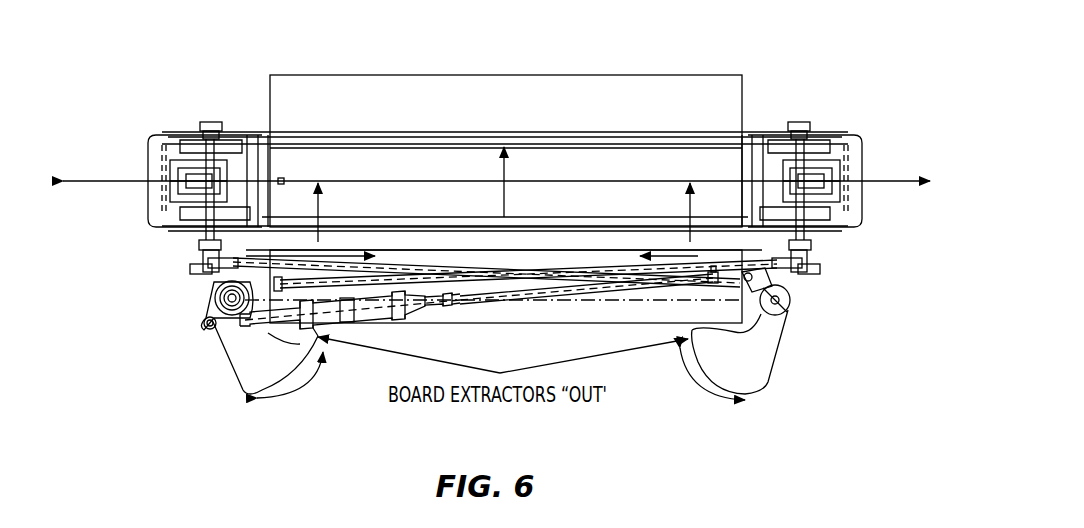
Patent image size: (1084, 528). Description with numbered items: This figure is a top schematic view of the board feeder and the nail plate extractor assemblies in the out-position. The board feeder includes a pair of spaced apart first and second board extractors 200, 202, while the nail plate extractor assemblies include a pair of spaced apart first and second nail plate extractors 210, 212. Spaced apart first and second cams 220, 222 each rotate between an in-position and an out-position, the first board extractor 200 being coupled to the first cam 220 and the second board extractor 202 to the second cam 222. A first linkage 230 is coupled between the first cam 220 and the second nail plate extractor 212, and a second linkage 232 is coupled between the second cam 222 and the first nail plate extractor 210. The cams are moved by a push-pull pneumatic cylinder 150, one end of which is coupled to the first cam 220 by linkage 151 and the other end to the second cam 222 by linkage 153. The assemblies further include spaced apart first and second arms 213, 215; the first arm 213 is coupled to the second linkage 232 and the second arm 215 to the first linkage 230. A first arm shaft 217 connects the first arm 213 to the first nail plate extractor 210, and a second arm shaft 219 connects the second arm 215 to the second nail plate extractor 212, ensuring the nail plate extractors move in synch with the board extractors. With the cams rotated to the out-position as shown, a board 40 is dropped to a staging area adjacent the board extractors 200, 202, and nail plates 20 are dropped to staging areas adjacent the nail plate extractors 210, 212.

The nail plates 20 is at (238, 168).
The board 40 is at (690, 80).
The push-pull pneumatic cylinder 150 is at (383, 322).
The linkage 151 is at (272, 333).
The linkage 153 is at (512, 305).
The first board extractor 200 is at (243, 393).
The second board extractor 202 is at (766, 378).
The first nail plate extractor 210 is at (158, 190).
The second nail plate extractor 212 is at (850, 187).
The first arm 213 is at (193, 236).
The second arm 215 is at (810, 252).
The first arm shaft 217 is at (197, 247).
The second arm shaft 219 is at (812, 237).
The first cam 220 is at (212, 300).
The second cam 222 is at (765, 280).
The first linkage 230 is at (345, 333).
The second linkage 232 is at (235, 268).